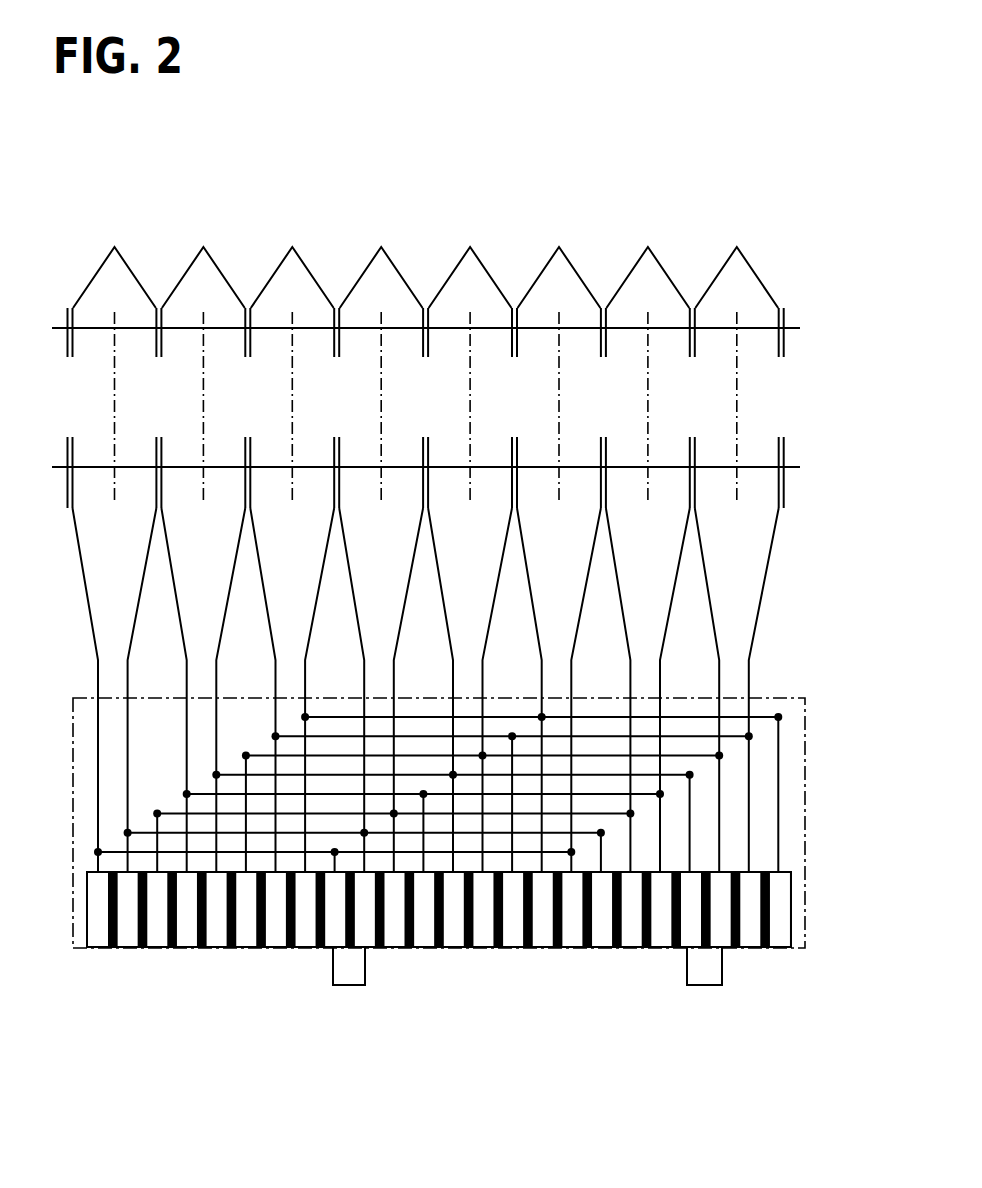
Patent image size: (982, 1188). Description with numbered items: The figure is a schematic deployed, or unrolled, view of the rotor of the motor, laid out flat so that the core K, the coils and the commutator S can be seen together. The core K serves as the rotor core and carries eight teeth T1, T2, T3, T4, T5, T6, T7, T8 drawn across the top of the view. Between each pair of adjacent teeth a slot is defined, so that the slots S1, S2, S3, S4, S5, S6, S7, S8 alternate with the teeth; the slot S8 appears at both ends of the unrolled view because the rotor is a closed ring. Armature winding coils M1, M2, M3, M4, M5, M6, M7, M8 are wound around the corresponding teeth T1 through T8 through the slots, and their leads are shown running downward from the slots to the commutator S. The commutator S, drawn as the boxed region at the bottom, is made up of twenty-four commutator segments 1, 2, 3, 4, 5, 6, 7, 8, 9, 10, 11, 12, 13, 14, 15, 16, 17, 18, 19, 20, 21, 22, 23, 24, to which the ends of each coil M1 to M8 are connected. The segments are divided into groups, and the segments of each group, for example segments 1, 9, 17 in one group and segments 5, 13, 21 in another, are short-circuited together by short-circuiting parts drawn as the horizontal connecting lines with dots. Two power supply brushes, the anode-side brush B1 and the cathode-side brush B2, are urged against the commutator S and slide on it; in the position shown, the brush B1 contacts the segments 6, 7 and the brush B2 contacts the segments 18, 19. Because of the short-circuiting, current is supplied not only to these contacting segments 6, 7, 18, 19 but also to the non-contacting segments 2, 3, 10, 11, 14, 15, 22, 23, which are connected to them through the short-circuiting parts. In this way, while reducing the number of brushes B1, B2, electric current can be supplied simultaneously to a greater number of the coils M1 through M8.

The core K is at (59, 322).
The tooth T1 is at (114, 312).
The tooth T2 is at (203, 312).
The tooth T3 is at (292, 312).
The tooth T4 is at (381, 312).
The tooth T5 is at (470, 312).
The tooth T6 is at (559, 312).
The tooth T7 is at (648, 312).
The tooth T8 is at (737, 312).
The slot S1 is at (159, 408).
The slot S2 is at (248, 408).
The slot S3 is at (337, 408).
The slot S4 is at (426, 408).
The slot S5 is at (515, 408).
The slot S6 is at (604, 408).
The slot S7 is at (693, 408).
The slot S8 is at (425, 408).
The coil M1 is at (150, 542).
The coil M2 is at (239, 542).
The coil M3 is at (328, 542).
The coil M4 is at (417, 542).
The coil M5 is at (506, 542).
The coil M6 is at (595, 542).
The coil M7 is at (684, 542).
The coil M8 is at (773, 542).
The commutator S is at (805, 757).
The anode-side power supply brush B1 is at (365, 970).
The cathode-side power supply brush B2 is at (722, 970).
The commutator segment 1 is at (187, 909).
The commutator segment 2 is at (217, 909).
The commutator segment 3 is at (246, 909).
The commutator segment 4 is at (276, 909).
The commutator segment 5 is at (306, 909).
The commutator segment 6 is at (335, 909).
The commutator segment 7 is at (365, 909).
The commutator segment 8 is at (395, 909).
The commutator segment 9 is at (424, 909).
The commutator segment 10 is at (454, 909).
The commutator segment 11 is at (483, 909).
The commutator segment 12 is at (513, 909).
The commutator segment 13 is at (543, 909).
The commutator segment 14 is at (572, 909).
The commutator segment 15 is at (602, 909).
The commutator segment 16 is at (632, 909).
The commutator segment 17 is at (661, 909).
The commutator segment 18 is at (691, 909).
The commutator segment 19 is at (721, 909).
The commutator segment 20 is at (750, 909).
The commutator segment 21 is at (780, 909).
The commutator segment 22 is at (98, 909).
The commutator segment 23 is at (128, 909).
The commutator segment 24 is at (157, 909).